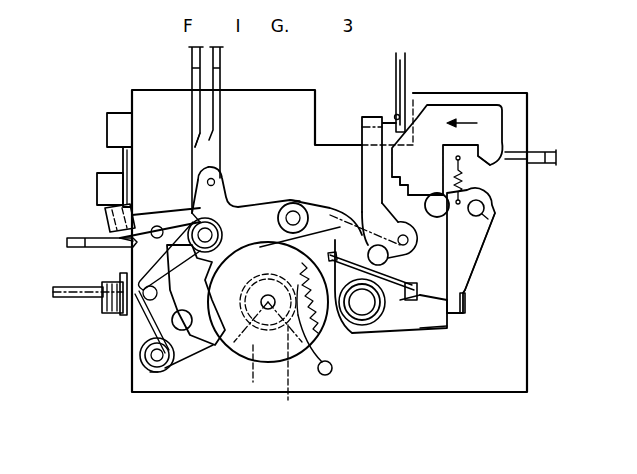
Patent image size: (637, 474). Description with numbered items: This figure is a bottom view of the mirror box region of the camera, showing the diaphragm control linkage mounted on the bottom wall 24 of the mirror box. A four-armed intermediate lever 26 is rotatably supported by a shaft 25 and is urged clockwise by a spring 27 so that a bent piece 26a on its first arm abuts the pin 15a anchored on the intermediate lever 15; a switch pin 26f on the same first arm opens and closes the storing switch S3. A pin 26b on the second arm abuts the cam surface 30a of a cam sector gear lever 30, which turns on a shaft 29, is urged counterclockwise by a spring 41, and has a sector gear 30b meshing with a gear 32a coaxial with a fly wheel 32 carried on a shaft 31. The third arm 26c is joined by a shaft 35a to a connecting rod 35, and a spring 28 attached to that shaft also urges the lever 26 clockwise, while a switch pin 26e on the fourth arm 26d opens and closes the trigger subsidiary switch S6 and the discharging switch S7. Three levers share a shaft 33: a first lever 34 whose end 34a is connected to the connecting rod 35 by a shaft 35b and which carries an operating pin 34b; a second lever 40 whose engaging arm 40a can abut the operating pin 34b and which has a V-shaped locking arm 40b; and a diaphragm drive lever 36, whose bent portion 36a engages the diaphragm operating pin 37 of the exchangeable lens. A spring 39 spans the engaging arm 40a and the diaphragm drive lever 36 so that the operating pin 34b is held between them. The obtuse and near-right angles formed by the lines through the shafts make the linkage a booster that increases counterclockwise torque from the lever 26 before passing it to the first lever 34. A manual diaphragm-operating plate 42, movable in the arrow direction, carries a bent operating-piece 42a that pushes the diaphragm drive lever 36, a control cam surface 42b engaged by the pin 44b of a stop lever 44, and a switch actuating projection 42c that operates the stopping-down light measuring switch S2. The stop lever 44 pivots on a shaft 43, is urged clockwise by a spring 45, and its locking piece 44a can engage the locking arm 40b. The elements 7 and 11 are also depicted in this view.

The push rod 7 is at (60, 288).
The hatched bracket 11 is at (103, 312).
The intermediate lever 15 is at (122, 152).
The pin 15a is at (97, 192).
The bottom wall 24 is at (283, 98).
The shaft 25 is at (190, 221).
The intermediate lever 26 is at (238, 208).
The bent piece 26a is at (108, 221).
The pin 26b is at (137, 344).
The third arm 26c is at (278, 198).
The fourth arm 26d is at (193, 141).
The switch pin 26e is at (215, 173).
The switch pin 26f is at (130, 249).
The spring 27 is at (177, 224).
The spring 28 is at (310, 262).
The shaft 29 is at (154, 373).
The cam sector gear lever 30 is at (182, 370).
The cam surface 30a is at (223, 348).
The sector gear 30b is at (262, 347).
The shaft 31 is at (267, 297).
The fly wheel 32 is at (309, 345).
The gear 32a is at (292, 380).
The shaft 33 is at (358, 324).
The first lever 34 is at (413, 252).
The end 34a is at (409, 240).
The operating pin 34b is at (417, 292).
The connecting rod 35 is at (345, 208).
The shaft 35a is at (296, 209).
The shaft 35b is at (407, 236).
The diaphragm drive lever 36 is at (360, 130).
The bent portion 36a is at (396, 114).
The diaphragm operating pin 37 is at (407, 76).
The spring 39 is at (405, 302).
The second lever 40 is at (378, 326).
The engaging arm 40a is at (414, 286).
The locking arm 40b is at (447, 326).
The spring 41 is at (137, 318).
The manual diaphragm-operating plate 42 is at (477, 112).
The bent operating-piece 42a is at (395, 182).
The control cam surface 42b is at (440, 193).
The switch actuating projection 42c is at (495, 152).
The shaft 43 is at (494, 214).
The stop lever 44 is at (480, 255).
The locking piece 44a is at (466, 305).
The pin 44b is at (470, 272).
The spring 45 is at (462, 167).
The stopping-down light measuring switch S2 is at (551, 164).
The storing switch S3 is at (67, 242).
The trigger subsidiary switch S6 is at (222, 48).
The discharging switch S7 is at (190, 48).